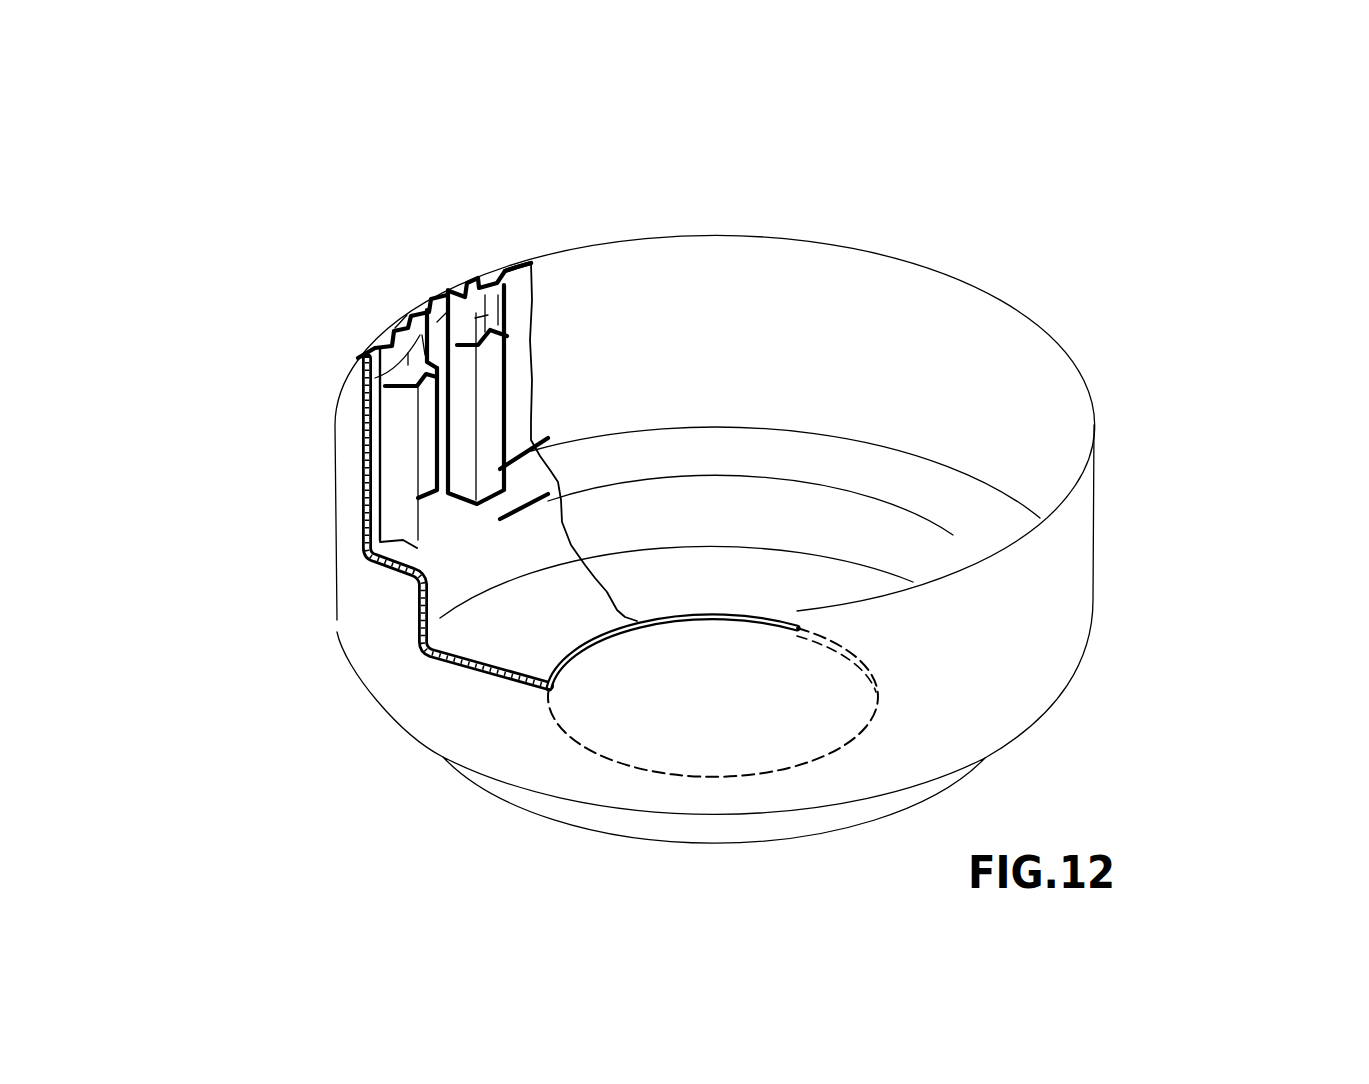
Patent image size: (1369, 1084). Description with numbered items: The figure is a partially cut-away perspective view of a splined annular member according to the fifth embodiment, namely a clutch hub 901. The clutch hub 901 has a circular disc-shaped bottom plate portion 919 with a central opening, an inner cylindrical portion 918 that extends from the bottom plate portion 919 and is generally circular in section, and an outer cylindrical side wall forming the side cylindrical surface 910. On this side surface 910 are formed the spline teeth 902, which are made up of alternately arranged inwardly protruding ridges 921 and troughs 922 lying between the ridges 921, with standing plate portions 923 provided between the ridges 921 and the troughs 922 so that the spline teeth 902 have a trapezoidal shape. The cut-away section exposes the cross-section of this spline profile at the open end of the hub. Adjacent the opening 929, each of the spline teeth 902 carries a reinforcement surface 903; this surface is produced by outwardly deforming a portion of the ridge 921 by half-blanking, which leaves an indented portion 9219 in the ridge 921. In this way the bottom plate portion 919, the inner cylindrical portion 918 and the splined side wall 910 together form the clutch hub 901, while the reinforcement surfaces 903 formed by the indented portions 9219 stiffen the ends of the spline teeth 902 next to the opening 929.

The clutch hub 901 is at (722, 222).
The spline teeth 902 is at (450, 275).
The reinforcement surface 903 is at (237, 258).
The side cylindrical surface 910 is at (1098, 592).
The inner cylindrical portion 918 is at (440, 618).
The bottom plate portion 919 is at (530, 650).
The ridge 921 is at (432, 476).
The trough 922 is at (448, 303).
The standing plate portion 923 is at (468, 412).
The opening 929 is at (513, 250).
The indented portion 9219 is at (356, 370).